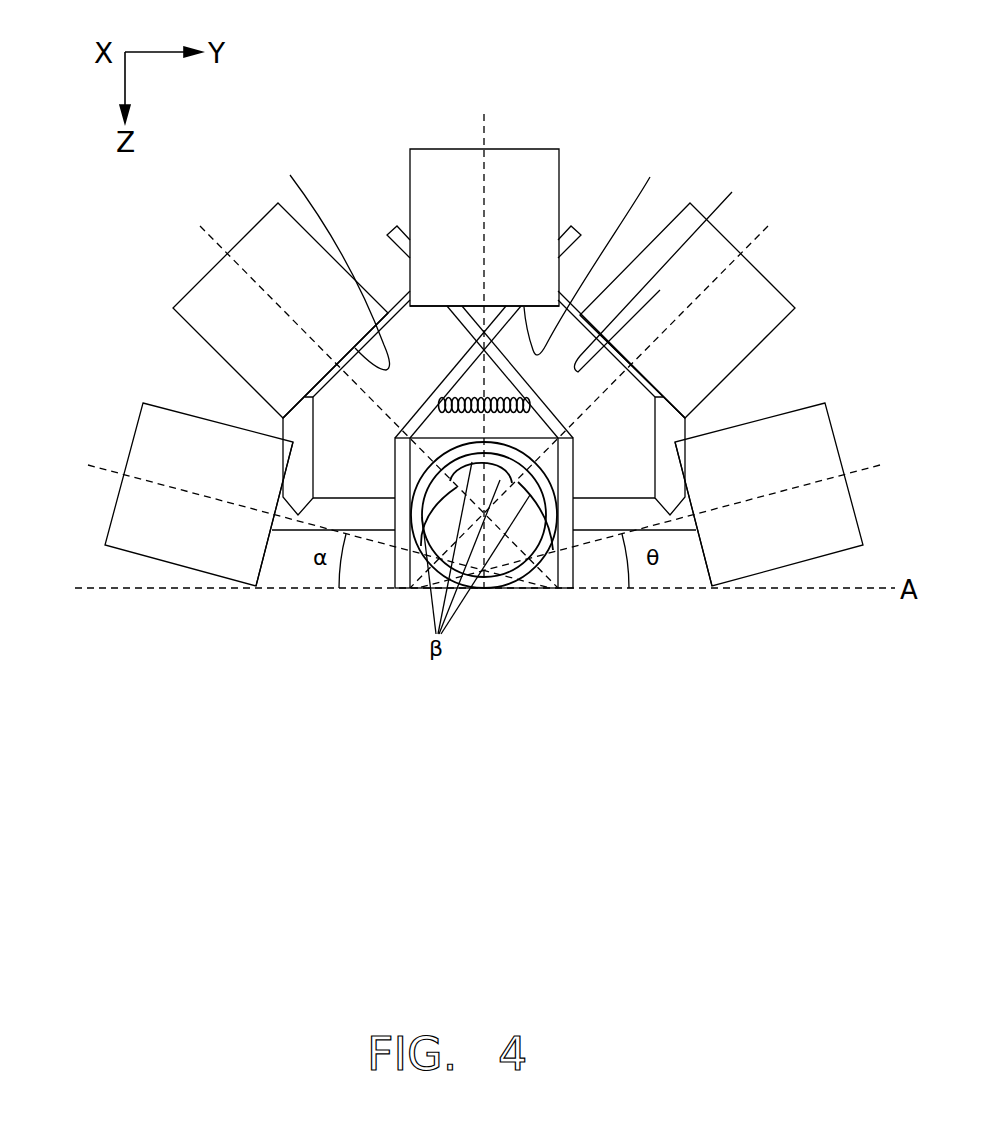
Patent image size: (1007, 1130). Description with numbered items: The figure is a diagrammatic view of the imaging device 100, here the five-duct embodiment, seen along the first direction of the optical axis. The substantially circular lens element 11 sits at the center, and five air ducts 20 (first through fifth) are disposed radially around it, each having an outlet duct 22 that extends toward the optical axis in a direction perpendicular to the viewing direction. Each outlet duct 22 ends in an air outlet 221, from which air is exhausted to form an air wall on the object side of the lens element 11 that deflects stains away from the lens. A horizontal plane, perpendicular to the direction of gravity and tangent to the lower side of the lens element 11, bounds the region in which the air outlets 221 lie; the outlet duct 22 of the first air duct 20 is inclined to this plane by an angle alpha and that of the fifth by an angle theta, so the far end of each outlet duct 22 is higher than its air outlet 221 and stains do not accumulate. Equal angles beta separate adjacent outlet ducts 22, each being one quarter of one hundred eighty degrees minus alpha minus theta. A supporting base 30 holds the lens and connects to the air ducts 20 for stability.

The imaging device 100 is at (608, 26).
The air duct 20 is at (520, 148).
The outlet duct 22 is at (497, 297).
The air outlet 221 is at (691, 626).
The supporting base 30 is at (442, 386).
The lens element 11 is at (508, 553).